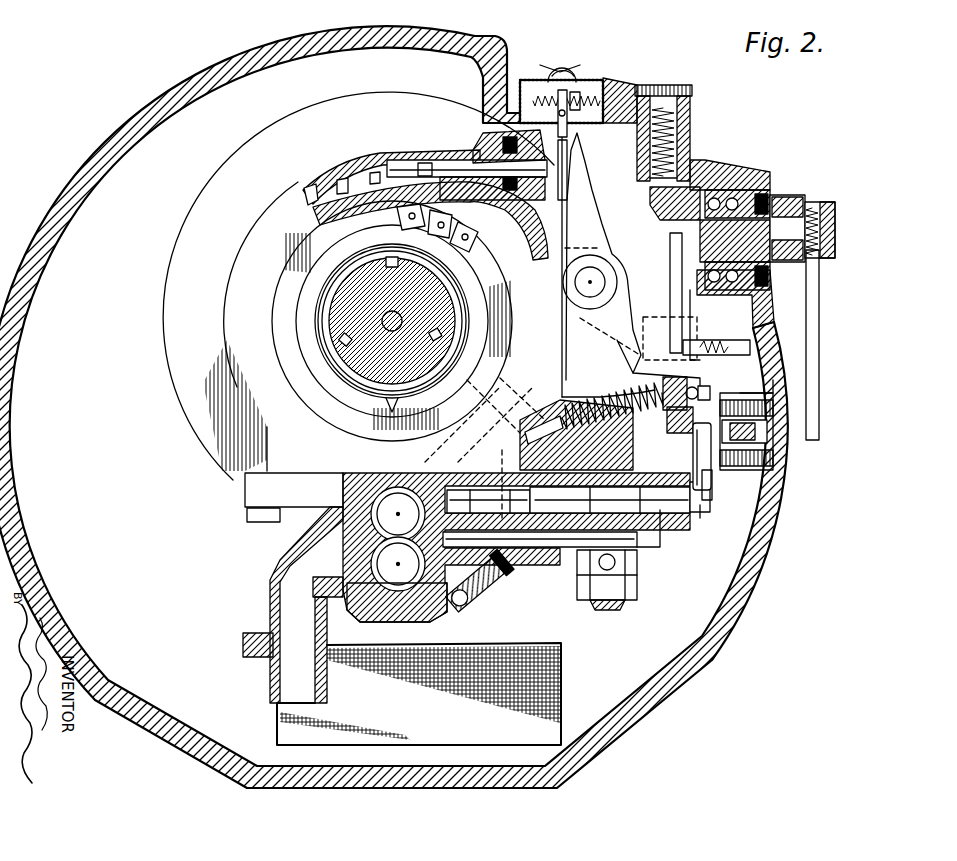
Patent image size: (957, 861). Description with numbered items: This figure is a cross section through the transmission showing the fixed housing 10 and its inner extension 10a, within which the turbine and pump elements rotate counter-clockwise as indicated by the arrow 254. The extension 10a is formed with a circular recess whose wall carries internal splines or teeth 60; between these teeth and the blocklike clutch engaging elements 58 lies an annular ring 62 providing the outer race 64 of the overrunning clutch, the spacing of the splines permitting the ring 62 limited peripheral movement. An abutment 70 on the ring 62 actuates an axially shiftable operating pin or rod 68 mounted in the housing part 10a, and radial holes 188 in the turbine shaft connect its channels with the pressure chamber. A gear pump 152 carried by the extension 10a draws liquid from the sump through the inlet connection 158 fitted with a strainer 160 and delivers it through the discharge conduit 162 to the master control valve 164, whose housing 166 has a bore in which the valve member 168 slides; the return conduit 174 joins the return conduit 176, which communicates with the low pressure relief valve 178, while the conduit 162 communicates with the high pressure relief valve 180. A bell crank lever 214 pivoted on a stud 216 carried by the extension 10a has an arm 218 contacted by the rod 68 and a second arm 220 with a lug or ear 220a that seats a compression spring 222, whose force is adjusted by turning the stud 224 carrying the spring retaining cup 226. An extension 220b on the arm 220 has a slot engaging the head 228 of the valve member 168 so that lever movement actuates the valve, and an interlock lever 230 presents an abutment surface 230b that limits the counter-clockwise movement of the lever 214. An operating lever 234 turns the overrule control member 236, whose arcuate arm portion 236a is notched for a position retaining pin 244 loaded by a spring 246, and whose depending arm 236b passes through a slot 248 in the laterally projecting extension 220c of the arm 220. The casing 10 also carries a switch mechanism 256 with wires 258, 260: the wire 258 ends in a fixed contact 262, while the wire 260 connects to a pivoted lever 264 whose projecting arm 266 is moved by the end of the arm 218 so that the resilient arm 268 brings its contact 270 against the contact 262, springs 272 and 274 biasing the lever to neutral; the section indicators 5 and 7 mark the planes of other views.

The fixed housing 10 is at (768, 566).
The inner extension of the fixed housing 10a is at (260, 488).
The clutch engaging elements 58 is at (397, 215).
The internal splines or teeth 60 is at (340, 178).
The annular ring 62 is at (318, 216).
The outer race 64 is at (338, 220).
The operating pin or rod 68 is at (310, 186).
The abutment 70 is at (386, 172).
The pump 152 is at (363, 548).
The inlet connection 158 is at (275, 690).
The strainer 160 is at (558, 708).
The discharge conduit 162 is at (538, 548).
The master control valve 164 is at (660, 512).
The valve housing 166 is at (437, 613).
The valve member 168 is at (712, 485).
The return conduit 174 is at (505, 470).
The return conduit 176 is at (652, 485).
The low pressure relief valve 178 is at (620, 598).
The high pressure relief valve 180 is at (500, 582).
The radial holes 188 is at (392, 332).
The bell crank lever 214 is at (596, 330).
The stud 216 is at (580, 292).
The lever arm 218 is at (571, 222).
The second lever arm 220 is at (617, 342).
The lug or ear 220a is at (693, 435).
The extension 220b is at (712, 506).
The laterally projecting extension 220c is at (775, 380).
The spring 222 is at (572, 418).
The stud 224 is at (704, 393).
The spring retaining cup 226 is at (675, 410).
The valve head 228 is at (700, 516).
The interlock lever 230 is at (760, 440).
The abutment surface 230b is at (765, 400).
The operating lever 234 is at (820, 298).
The overrule control member 236 is at (780, 200).
The arcuate arm portion 236a is at (715, 188).
The depending arm 236b is at (676, 275).
The position retaining pin 244 is at (700, 162).
The spring 246 is at (692, 125).
The slot 248 is at (700, 340).
The arrow 254 is at (338, 375).
The switch mechanism 256 is at (606, 79).
The wire 258 is at (580, 72).
The wire 260 is at (558, 72).
The fixed contact 262 is at (580, 100).
The pivoted lever 264 is at (560, 118).
The projecting arm 266 is at (563, 170).
The resilient arm 268 is at (540, 92).
The contact 270 is at (572, 94).
The spring 272 is at (522, 130).
The spring 274 is at (671, 126).
The section line 5 is at (643, 277).
The section line 7 is at (627, 250).